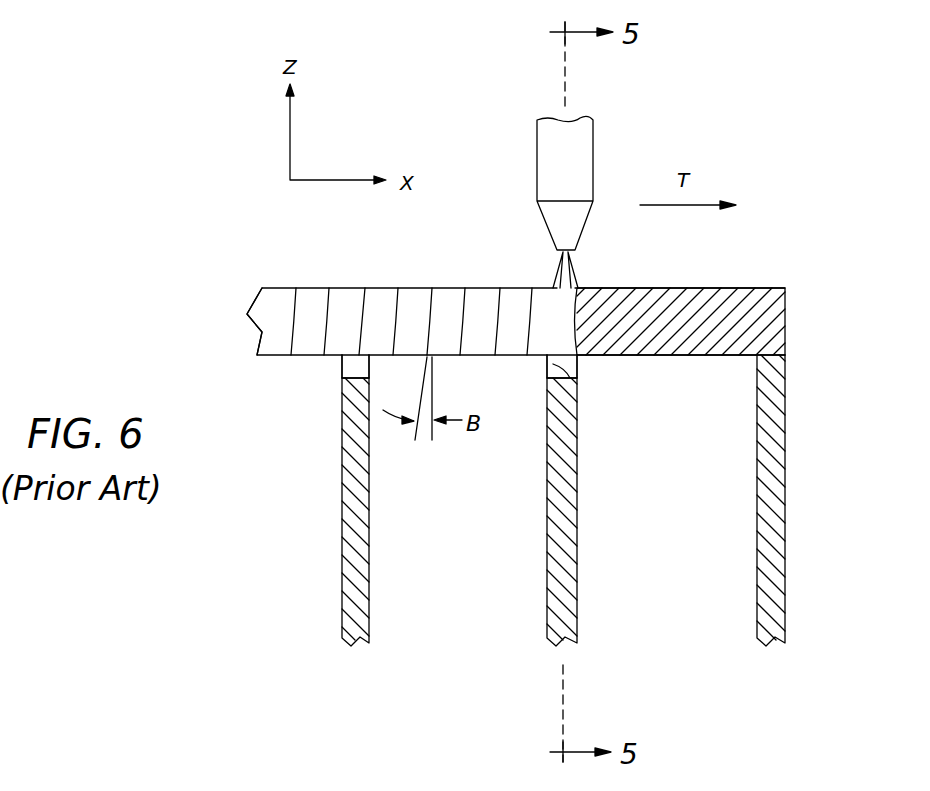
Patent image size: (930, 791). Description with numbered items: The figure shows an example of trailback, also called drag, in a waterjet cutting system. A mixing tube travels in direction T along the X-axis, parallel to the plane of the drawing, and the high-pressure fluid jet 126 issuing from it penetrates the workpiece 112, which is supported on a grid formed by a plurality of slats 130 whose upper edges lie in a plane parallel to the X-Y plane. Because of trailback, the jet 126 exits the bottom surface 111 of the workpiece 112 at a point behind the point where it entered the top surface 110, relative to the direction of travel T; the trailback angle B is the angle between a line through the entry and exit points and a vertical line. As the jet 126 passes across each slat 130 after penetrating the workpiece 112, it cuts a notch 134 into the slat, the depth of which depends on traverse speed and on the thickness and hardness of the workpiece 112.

The top surface 110 is at (370, 288).
The bottom surface 111 is at (285, 355).
The workpiece 112 is at (762, 325).
The high-pressure fluid jet 126 is at (557, 268).
The slats 130 is at (350, 532).
The notch 134 is at (350, 366).